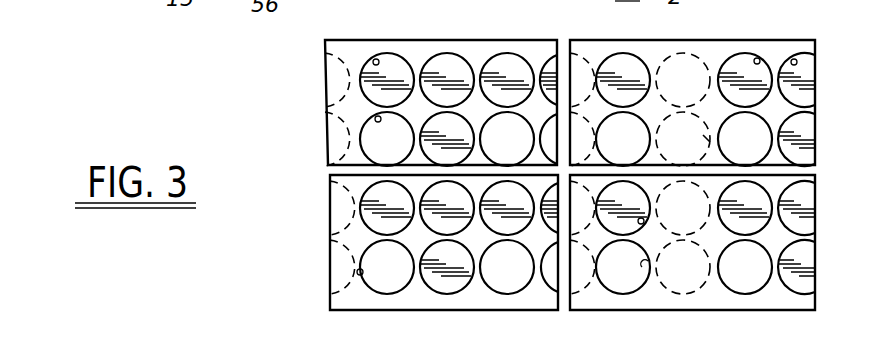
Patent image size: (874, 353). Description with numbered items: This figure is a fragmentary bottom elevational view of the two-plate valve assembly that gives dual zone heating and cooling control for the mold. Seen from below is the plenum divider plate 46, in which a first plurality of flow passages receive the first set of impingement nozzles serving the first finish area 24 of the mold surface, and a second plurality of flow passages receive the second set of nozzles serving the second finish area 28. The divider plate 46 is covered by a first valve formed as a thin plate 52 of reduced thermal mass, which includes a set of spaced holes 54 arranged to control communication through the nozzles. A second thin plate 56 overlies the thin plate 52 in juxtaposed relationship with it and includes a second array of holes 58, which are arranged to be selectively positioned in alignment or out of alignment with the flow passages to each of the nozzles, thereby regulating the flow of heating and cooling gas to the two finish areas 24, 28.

The first finish area 24 is at (638, 152).
The second finish area 28 is at (400, 153).
The plenum divider plate 46 is at (403, 67).
The thin plate 52 is at (612, 190).
The spaced holes 54 is at (698, 63).
The second thin plate 56 is at (758, 28).
The second array of holes 58 is at (380, 117).